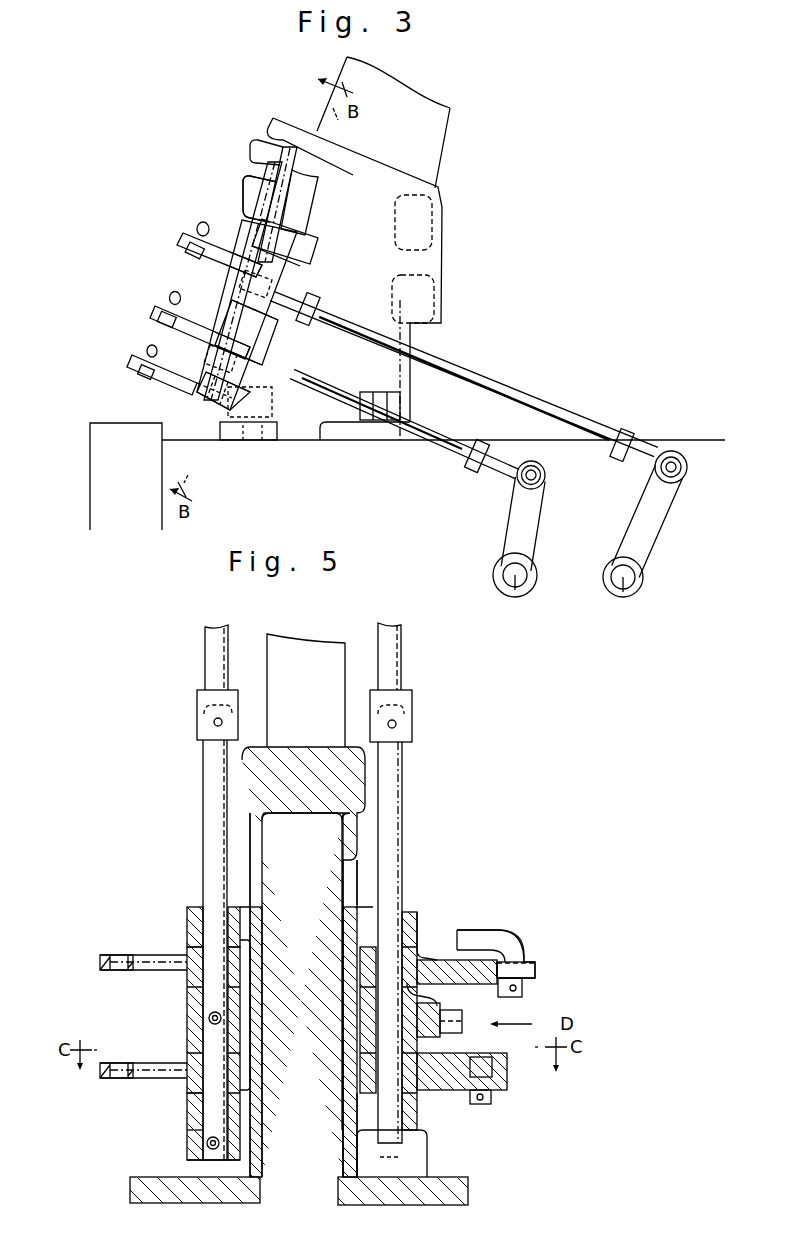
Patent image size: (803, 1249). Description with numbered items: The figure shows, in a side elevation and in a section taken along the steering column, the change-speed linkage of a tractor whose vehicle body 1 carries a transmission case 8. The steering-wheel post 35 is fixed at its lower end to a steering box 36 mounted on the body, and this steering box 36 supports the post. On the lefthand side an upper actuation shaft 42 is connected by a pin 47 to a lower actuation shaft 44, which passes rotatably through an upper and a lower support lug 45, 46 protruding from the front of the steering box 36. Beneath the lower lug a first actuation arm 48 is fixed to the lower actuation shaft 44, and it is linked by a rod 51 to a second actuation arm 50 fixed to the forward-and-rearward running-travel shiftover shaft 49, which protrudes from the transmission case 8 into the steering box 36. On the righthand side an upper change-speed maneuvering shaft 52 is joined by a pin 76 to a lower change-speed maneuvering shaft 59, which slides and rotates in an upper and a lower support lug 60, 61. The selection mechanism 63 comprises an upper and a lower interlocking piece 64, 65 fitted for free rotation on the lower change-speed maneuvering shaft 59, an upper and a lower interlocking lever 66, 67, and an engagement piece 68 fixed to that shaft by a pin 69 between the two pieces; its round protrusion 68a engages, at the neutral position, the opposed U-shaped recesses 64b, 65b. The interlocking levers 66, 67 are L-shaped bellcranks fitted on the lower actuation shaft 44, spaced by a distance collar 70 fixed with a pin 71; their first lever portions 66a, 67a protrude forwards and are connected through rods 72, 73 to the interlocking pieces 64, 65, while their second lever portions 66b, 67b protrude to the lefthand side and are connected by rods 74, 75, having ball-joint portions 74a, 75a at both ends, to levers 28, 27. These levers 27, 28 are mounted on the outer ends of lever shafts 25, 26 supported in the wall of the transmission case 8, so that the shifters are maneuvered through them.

In FIG. 3, the tractor vehicle body 1 is at (665, 418).
In FIG. 3, the transmission case 8 is at (520, 440).
In FIG. 3, the lever shaft 25 is at (515, 584).
In FIG. 3, the lever shaft 26 is at (623, 584).
In FIG. 3, the lever 27 is at (505, 553).
In FIG. 3, the lever 28 is at (653, 530).
In FIG. 3, the steering-wheel post 35 is at (423, 147).
In FIG. 5, the steering-wheel post 35 is at (310, 650).
In FIG. 3, the steering box 36 is at (394, 279).
In FIG. 5, the steering box 36 is at (355, 795).
In FIG. 5, the upper actuation shaft 42 is at (213, 665).
In FIG. 3, the lower actuation shaft 44 is at (297, 213).
In FIG. 5, the lower actuation shaft 44 is at (213, 846).
In FIG. 5, the upper support lug 45 is at (192, 925).
In FIG. 5, the lower support lug 46 is at (196, 1118).
In FIG. 5, the pin 47 is at (216, 724).
In FIG. 3, the first actuation arm 48 is at (200, 410).
In FIG. 5, the first actuation arm 48 is at (195, 1148).
In FIG. 3, the forward-and-rearward running-travel shiftover shaft 49 is at (252, 441).
In FIG. 3, the second actuation arm 50 is at (160, 380).
In FIG. 3, the rod 51 is at (152, 347).
In FIG. 5, the upper change-speed maneuvering shaft 52 is at (398, 655).
In FIG. 5, the lower change-speed maneuvering shaft 59 is at (390, 868).
In FIG. 5, the upper support lug 60 is at (413, 928).
In FIG. 5, the lower support lug 61 is at (398, 1140).
In FIG. 3, the selection mechanism 63 is at (198, 210).
In FIG. 5, the selection mechanism 63 is at (545, 940).
In FIG. 5, the upper interlocking piece 64 is at (463, 967).
In FIG. 5, the recess 64b is at (535, 946).
In FIG. 5, the lower interlocking piece 65 is at (430, 1072).
In FIG. 5, the recess 65b is at (492, 1068).
In FIG. 3, the upper interlocking lever 66 is at (183, 228).
In FIG. 5, the upper interlocking lever 66 is at (168, 972).
In FIG. 3, the first lever portion 66a is at (222, 254).
In FIG. 3, the second lever portion 66b is at (270, 257).
In FIG. 5, the second lever portion 66b is at (130, 968).
In FIG. 3, the lower interlocking lever 67 is at (152, 297).
In FIG. 5, the lower interlocking lever 67 is at (152, 1082).
In FIG. 3, the first lever portion 67a is at (203, 325).
In FIG. 3, the second lever portion 67b is at (237, 342).
In FIG. 5, the second lever portion 67b is at (107, 1080).
In FIG. 5, the engagement piece 68 is at (362, 1045).
In FIG. 5, the protrusion 68a is at (468, 1020).
In FIG. 5, the pin 69 is at (345, 1005).
In FIG. 3, the distance collar 70 is at (420, 322).
In FIG. 5, the distance collar 70 is at (233, 1025).
In FIG. 5, the pin 71 is at (212, 1022).
In FIG. 3, the rod 72 is at (206, 223).
In FIG. 5, the rod 72 is at (467, 935).
In FIG. 3, the rod 73 is at (175, 292).
In FIG. 5, the rod 73 is at (492, 1104).
In FIG. 3, the rod 74 is at (467, 372).
In FIG. 3, the ball-joint portion 74a is at (262, 293).
In FIG. 3, the rod 75 is at (427, 440).
In FIG. 3, the ball-joint portion 75a is at (253, 370).
In FIG. 5, the pin 76 is at (394, 725).